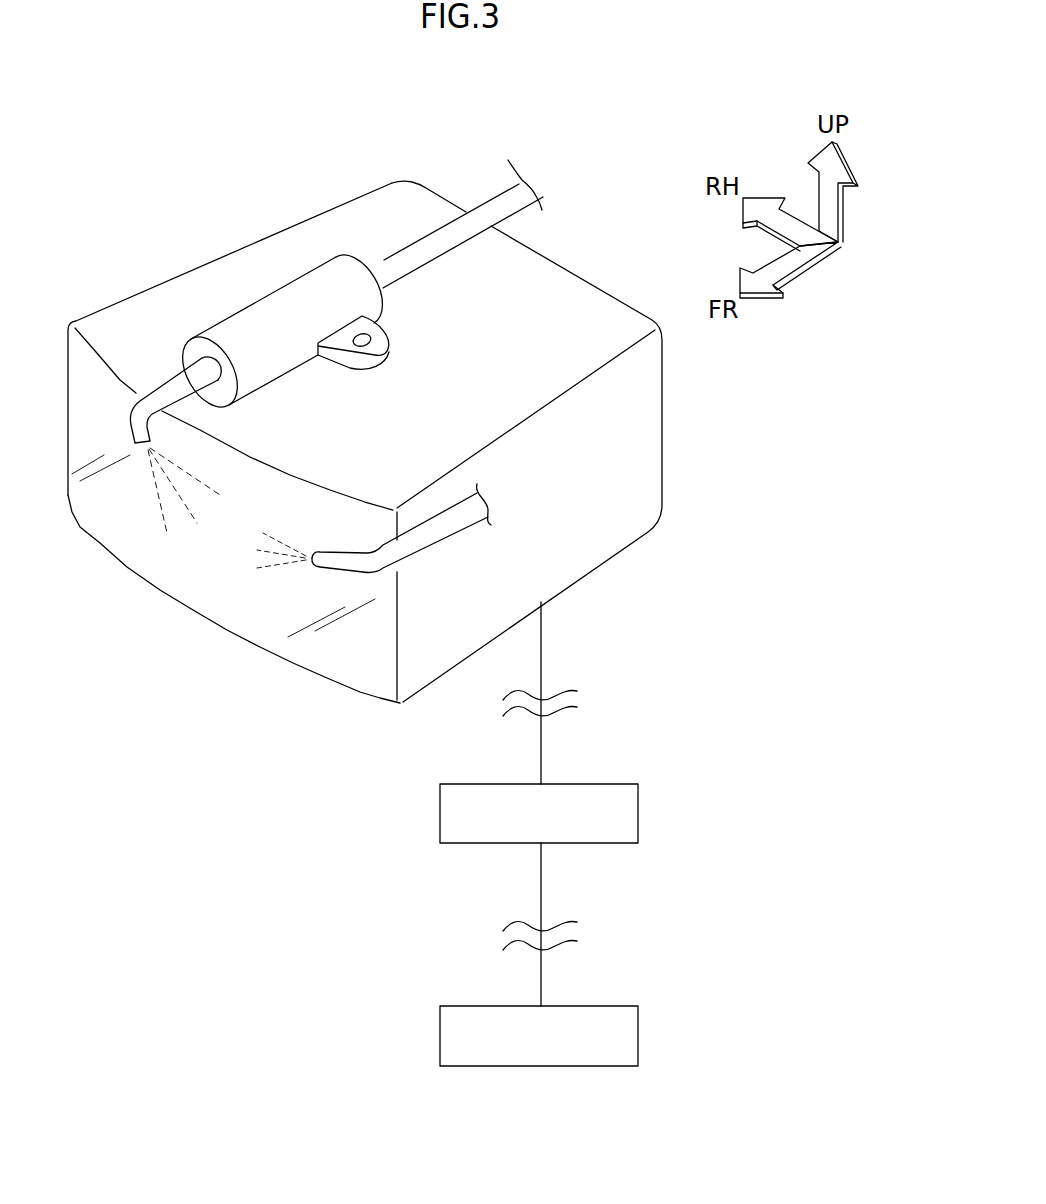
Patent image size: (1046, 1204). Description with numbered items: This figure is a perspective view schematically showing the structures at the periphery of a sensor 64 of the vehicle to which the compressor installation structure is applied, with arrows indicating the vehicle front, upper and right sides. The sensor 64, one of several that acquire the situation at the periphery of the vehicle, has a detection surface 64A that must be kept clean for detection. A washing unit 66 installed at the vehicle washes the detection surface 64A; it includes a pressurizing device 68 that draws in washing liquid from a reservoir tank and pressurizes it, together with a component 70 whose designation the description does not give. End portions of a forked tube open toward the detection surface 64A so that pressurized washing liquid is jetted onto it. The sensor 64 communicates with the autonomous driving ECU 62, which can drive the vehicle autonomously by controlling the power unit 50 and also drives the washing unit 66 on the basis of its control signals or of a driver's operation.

The power unit 50 is at (638, 1033).
The autonomous driving ECU 62 is at (638, 810).
The sensor 64 is at (653, 430).
The detection surface 64A is at (234, 575).
The washing unit 66 is at (470, 153).
The pressurizing device 68 is at (362, 302).
The nozzle 70 is at (165, 342).